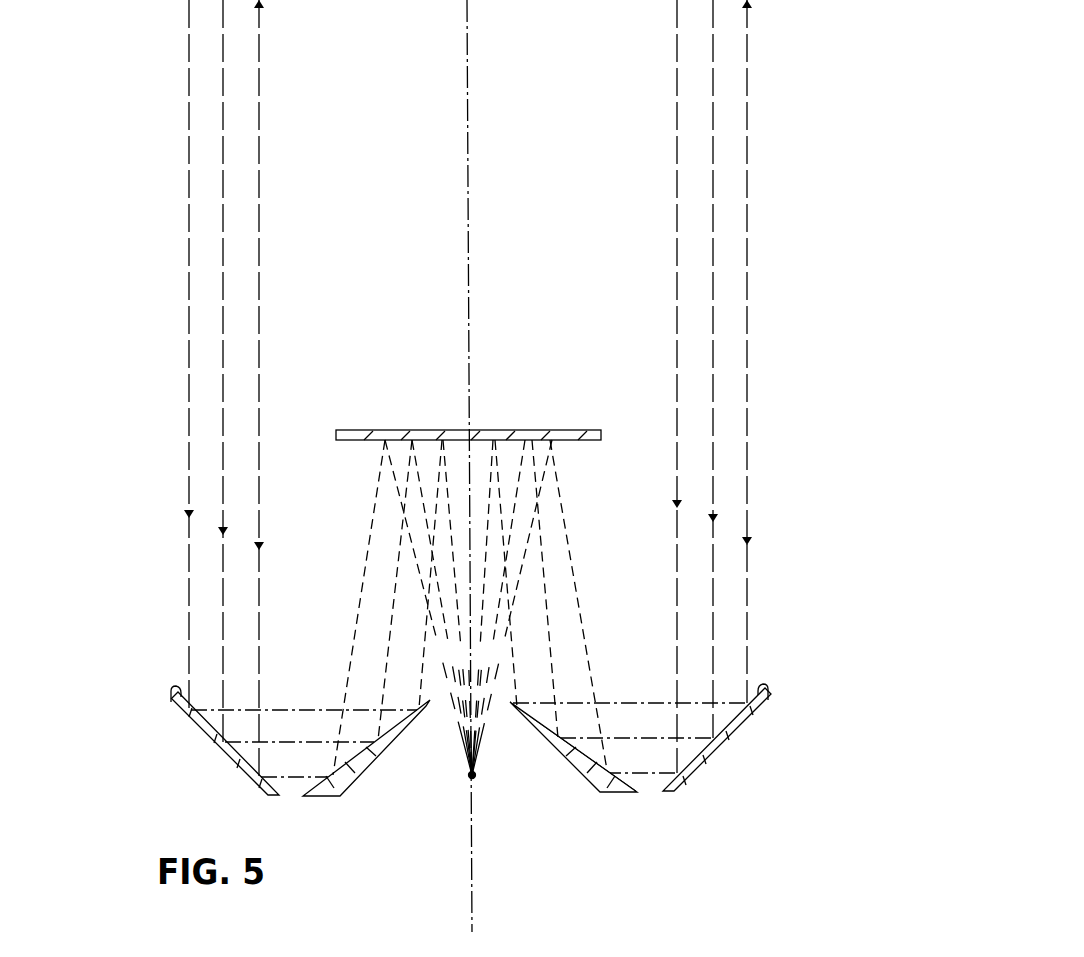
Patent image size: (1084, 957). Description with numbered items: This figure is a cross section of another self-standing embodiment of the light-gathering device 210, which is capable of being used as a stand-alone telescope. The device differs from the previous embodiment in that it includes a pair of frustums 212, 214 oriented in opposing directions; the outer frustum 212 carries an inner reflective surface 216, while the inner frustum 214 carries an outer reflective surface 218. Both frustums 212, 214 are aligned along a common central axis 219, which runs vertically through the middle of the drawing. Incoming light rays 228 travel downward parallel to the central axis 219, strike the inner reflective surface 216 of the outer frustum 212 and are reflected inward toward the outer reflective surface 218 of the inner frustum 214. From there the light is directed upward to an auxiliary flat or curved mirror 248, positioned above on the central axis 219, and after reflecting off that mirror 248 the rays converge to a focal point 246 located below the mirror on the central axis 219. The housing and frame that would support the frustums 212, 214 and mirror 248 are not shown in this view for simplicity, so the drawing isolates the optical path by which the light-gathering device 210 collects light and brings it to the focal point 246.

The light-gathering device 210 is at (466, 739).
The outer frustum 212 is at (180, 734).
The inner frustum 214 is at (378, 762).
The inner reflective surface 216 is at (172, 688).
The outer reflective surface 218 is at (588, 747).
The common central axis 219 is at (468, 184).
The incident light rays 228 is at (260, 138).
The focal point 246 is at (474, 776).
The auxiliary flat or curved mirror 248 is at (527, 438).